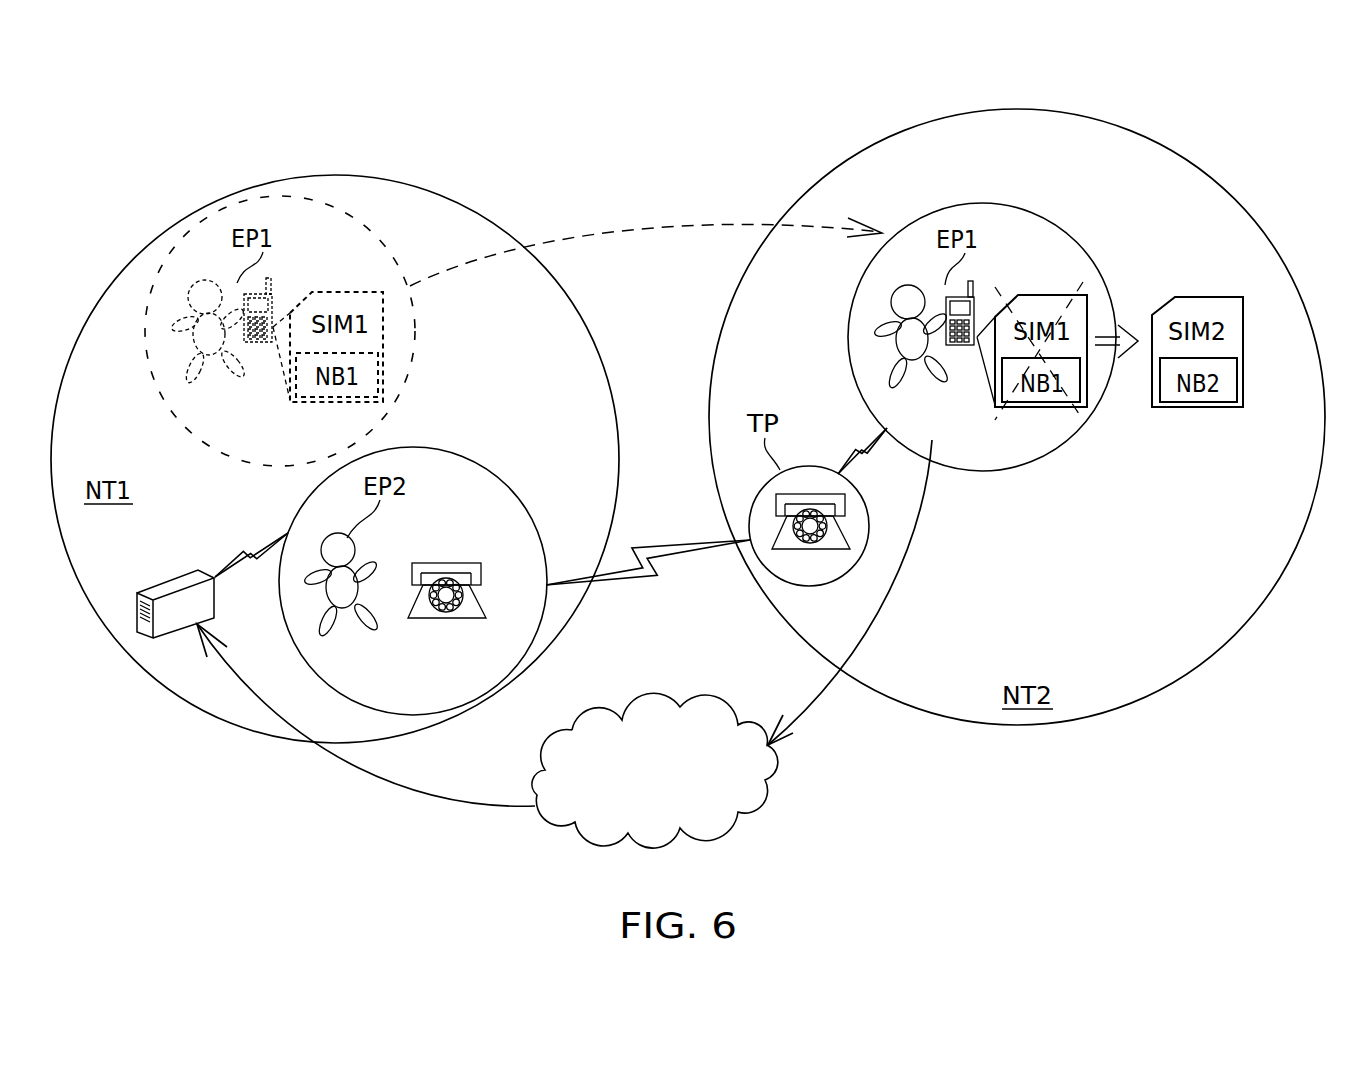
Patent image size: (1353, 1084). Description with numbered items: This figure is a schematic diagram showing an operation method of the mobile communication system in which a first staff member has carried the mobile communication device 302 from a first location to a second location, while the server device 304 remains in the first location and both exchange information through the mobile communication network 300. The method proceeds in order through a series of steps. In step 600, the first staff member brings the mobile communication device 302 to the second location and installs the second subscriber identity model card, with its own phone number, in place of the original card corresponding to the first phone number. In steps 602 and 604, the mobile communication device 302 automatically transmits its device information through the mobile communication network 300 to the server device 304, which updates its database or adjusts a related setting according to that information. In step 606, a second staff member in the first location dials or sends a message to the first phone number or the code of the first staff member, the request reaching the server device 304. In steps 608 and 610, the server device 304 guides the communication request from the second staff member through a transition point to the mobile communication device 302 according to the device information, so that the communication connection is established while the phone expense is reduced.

The mobile communication network 300 is at (663, 703).
The mobile communication device 302 is at (270, 290).
The server device 304 is at (177, 572).
The step of installing SIM2 in the mobile communication device 600 is at (688, 232).
The step of transmitting device information 602 is at (890, 594).
The step of updating the server database 604 is at (376, 800).
The step of dialing by staff EP2 606 is at (243, 540).
The step of guiding the communication request 608 is at (683, 543).
The step of establishing the communication connection 610 is at (852, 450).